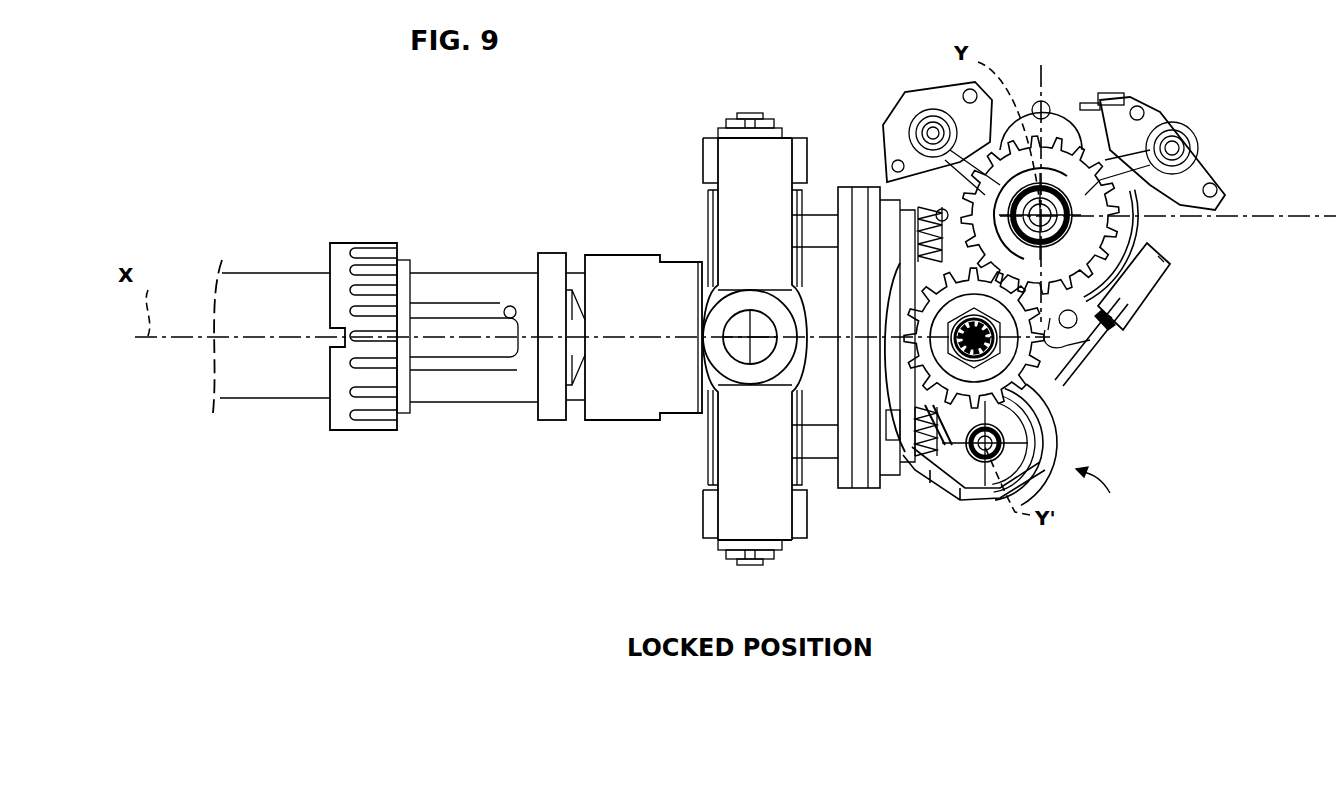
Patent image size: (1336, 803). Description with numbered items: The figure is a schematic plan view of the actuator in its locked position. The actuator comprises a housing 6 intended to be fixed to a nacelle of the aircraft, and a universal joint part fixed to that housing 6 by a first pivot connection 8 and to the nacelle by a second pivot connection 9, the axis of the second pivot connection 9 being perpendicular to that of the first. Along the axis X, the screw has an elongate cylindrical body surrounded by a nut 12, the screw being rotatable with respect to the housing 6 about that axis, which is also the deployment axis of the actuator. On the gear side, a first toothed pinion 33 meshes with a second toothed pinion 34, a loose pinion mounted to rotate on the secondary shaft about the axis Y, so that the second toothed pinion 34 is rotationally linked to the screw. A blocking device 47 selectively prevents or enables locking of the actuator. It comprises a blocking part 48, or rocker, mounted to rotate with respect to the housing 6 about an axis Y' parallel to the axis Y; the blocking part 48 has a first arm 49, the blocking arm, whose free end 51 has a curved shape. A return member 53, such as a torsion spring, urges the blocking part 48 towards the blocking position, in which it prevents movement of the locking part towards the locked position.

The housing 6 is at (818, 448).
The first pivot connection 8 is at (752, 120).
The second pivot connection 9 is at (760, 350).
The nut 12 is at (468, 287).
The first toothed pinion 33 is at (1035, 363).
The second toothed pinion 34 is at (1088, 165).
The blocking device 47 is at (1106, 488).
The blocking part 48 is at (1043, 411).
The first arm 49 is at (1086, 344).
The free end 51 is at (1135, 293).
The return member 53 is at (1000, 452).